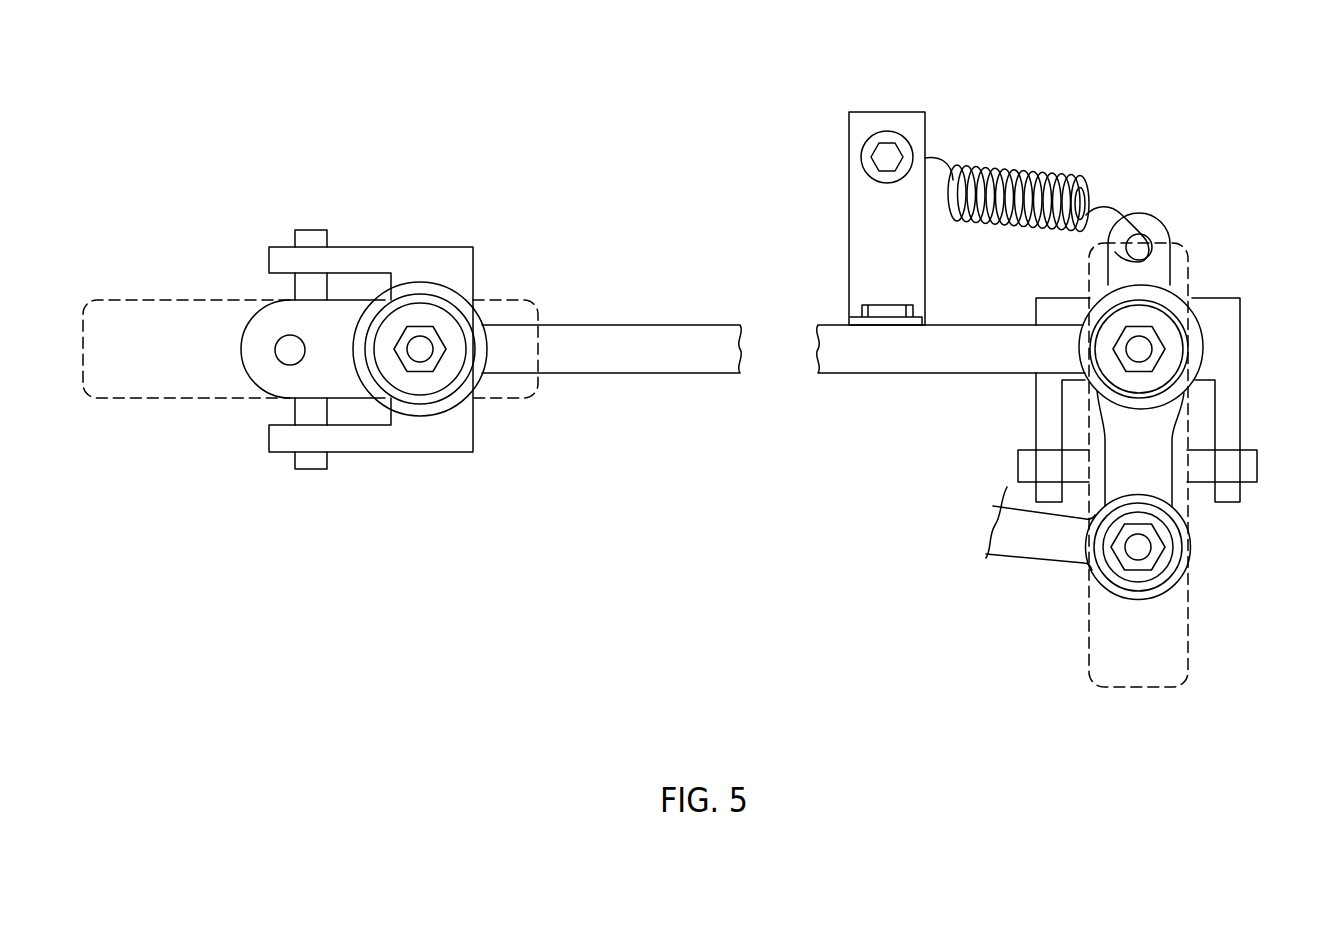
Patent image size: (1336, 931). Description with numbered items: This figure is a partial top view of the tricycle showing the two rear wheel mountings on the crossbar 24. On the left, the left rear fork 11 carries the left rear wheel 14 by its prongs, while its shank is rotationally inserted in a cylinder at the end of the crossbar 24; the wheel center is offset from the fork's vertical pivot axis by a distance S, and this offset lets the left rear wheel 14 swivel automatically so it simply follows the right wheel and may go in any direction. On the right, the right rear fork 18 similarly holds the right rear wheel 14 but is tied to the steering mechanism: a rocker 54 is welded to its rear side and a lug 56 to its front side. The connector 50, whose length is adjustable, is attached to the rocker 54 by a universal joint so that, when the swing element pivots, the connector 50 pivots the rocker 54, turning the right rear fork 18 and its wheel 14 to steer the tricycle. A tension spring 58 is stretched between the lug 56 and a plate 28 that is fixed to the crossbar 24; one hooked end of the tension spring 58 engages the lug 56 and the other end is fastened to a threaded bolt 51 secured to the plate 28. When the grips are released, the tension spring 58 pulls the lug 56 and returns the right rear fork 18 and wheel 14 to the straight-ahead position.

The left rear fork 11 is at (449, 440).
The distance S is at (422, 349).
The crossbar 24 is at (647, 335).
The plate 28 is at (863, 220).
The threaded bolt 51 is at (902, 143).
The tension spring 58 is at (1037, 167).
The lug 56 is at (1153, 228).
The right rear fork 18 is at (1218, 322).
The rocker 54 is at (1145, 477).
The connector 50 is at (1040, 537).
The rear wheel 14 is at (1188, 625).